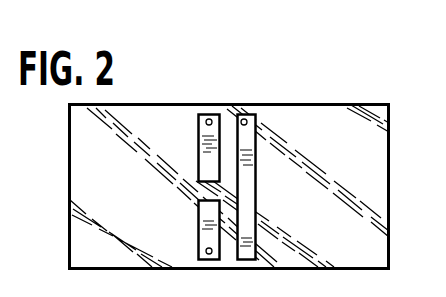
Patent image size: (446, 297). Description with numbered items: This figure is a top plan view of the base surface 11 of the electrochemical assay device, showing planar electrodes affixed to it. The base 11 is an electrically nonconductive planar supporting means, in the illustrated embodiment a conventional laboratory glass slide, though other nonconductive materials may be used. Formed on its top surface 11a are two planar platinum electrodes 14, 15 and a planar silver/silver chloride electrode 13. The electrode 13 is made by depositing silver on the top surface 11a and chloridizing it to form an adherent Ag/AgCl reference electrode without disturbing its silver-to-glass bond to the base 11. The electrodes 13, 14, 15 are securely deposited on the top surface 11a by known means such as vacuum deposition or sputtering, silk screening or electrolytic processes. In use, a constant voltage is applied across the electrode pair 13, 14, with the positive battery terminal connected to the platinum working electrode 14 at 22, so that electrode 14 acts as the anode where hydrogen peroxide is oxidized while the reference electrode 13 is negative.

The base surface 11 is at (395, 165).
The top surface 11a is at (338, 206).
The silver/silver chloride electrode 13 is at (209, 118).
The platinum working electrode 14 is at (256, 148).
The platinum electrode 15 is at (198, 217).
The connection point 22 is at (244, 118).